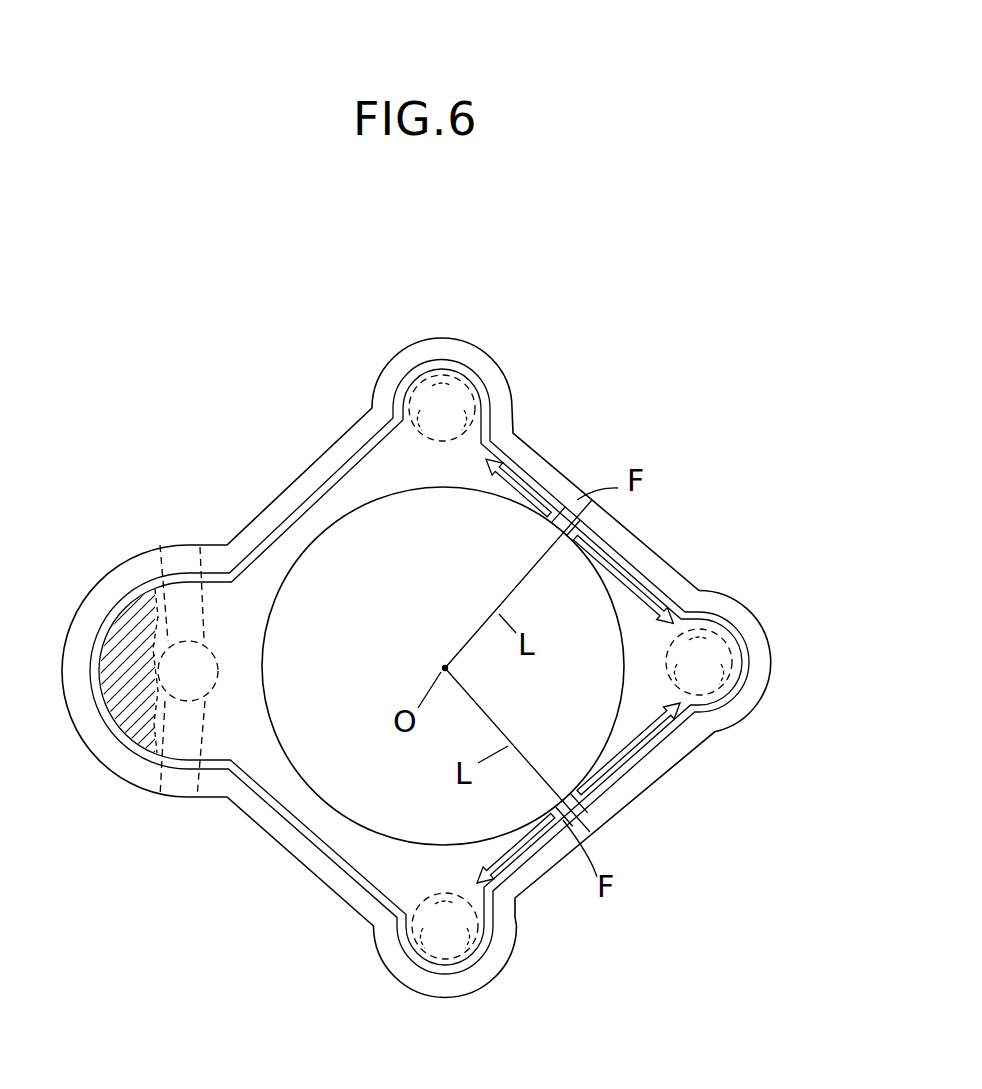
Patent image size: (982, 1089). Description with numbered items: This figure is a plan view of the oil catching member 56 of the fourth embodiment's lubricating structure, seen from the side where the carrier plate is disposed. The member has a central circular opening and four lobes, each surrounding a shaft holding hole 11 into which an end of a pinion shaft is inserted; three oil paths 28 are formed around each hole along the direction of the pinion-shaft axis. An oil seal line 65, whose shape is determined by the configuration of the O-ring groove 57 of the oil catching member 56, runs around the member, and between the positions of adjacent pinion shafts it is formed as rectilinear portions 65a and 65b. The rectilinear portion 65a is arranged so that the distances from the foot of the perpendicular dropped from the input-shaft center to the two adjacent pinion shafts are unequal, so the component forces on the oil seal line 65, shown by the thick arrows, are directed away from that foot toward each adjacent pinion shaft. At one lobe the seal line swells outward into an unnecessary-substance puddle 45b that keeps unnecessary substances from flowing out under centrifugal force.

The shaft holding hole 11 is at (390, 362).
The oil path 28 is at (474, 360).
The unnecessary-substance puddle 45b is at (103, 617).
The oil catching member 56 is at (627, 520).
The O-ring groove 57 is at (537, 488).
The oil seal line 65 is at (618, 669).
The rectilinear portion 65a is at (627, 557).
The rectilinear portion 65b is at (527, 463).